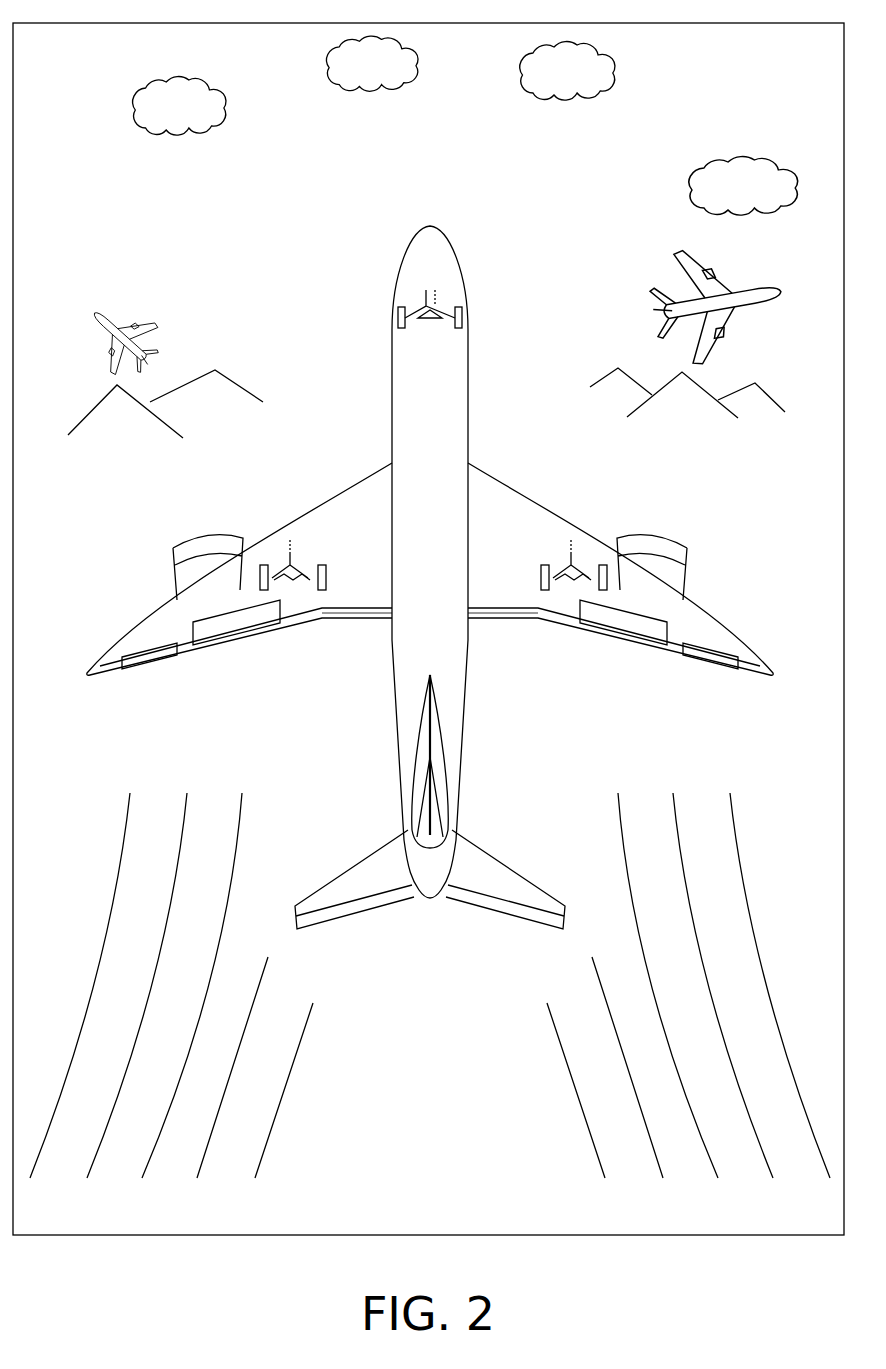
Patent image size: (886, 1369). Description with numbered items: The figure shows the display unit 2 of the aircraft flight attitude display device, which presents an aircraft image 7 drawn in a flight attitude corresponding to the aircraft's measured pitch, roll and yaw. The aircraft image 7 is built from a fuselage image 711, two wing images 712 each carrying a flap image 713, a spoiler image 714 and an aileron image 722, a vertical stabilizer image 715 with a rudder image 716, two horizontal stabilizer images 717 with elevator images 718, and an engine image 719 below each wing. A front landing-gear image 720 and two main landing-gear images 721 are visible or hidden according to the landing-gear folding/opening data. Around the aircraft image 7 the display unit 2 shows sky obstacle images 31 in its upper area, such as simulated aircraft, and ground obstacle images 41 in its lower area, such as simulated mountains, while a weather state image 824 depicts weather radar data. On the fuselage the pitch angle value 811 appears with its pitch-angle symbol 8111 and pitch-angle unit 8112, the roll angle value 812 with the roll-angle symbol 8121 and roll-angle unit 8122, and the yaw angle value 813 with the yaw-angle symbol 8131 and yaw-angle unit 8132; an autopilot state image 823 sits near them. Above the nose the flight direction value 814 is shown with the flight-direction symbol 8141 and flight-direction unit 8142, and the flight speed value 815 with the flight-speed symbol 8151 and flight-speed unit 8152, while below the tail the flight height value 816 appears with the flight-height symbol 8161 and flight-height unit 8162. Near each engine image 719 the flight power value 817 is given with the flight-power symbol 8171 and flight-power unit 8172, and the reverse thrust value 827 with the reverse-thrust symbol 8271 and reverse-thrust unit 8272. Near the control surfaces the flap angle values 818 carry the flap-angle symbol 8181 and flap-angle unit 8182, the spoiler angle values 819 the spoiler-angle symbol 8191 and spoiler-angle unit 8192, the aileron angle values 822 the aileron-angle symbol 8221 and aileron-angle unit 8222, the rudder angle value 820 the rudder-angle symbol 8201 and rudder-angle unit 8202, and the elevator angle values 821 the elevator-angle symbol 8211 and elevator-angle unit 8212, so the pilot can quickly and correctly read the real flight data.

The display unit 2 is at (165, 23).
The aircraft image 7 is at (386, 288).
The sky obstacle image 31 is at (775, 272).
The ground obstacle image 41 is at (238, 360).
The fuselage image 711 is at (468, 292).
The wing images 712 is at (100, 663).
The flap images 713 is at (300, 628).
The spoiler images 714 is at (318, 635).
The vertical stabilizer image 715 is at (412, 790).
The rudder image 716 is at (420, 830).
The horizontal stabilizer images 717 is at (335, 882).
The elevator images 718 is at (300, 923).
The engine image 719 is at (210, 538).
The front landing-gear image 720 is at (400, 318).
The main landing-gear images 721 is at (258, 578).
The aileron images 722 is at (112, 672).
The pitch angle value 811 is at (428, 442).
The pitch-angle symbol 8111 is at (402, 474).
The pitch-angle unit 8112 is at (455, 450).
The roll angle value 812 is at (423, 540).
The roll-angle symbol 8121 is at (400, 554).
The roll-angle unit 8122 is at (456, 545).
The yaw angle value 813 is at (438, 625).
The yaw-angle symbol 8131 is at (405, 626).
The yaw-angle unit 8132 is at (456, 611).
The flight direction value 814 is at (426, 140).
The flight-direction symbol 8141 is at (400, 160).
The flight-direction unit 8142 is at (457, 150).
The flight speed value 815 is at (412, 193).
The flight-speed symbol 8151 is at (362, 211).
The flight-speed unit 8152 is at (462, 208).
The flight height value 816 is at (428, 1111).
The flight-height symbol 8161 is at (375, 1094).
The flight-height unit 8162 is at (488, 1094).
The flight power value 817 is at (425, 472).
The flight-power symbol 8171 is at (88, 497).
The flight-power unit 8172 is at (118, 488).
The flap angle values 818 is at (434, 694).
The flap-angle symbol 8181 is at (250, 680).
The flap-angle unit 8182 is at (288, 678).
The spoiler angle values 819 is at (420, 540).
The spoiler-angle symbol 8191 is at (185, 600).
The spoiler-angle unit 8192 is at (248, 590).
The rudder angle value 820 is at (452, 920).
The rudder-angle symbol 8201 is at (428, 893).
The rudder-angle unit 8202 is at (455, 858).
The elevator angle values 821 is at (449, 909).
The elevator-angle symbol 8211 is at (370, 892).
The elevator-angle unit 8212 is at (398, 858).
The aileron angle values 822 is at (433, 699).
The aileron-angle symbol 8221 is at (160, 695).
The aileron-angle unit 8222 is at (190, 664).
The autopilot state image 823 is at (472, 375).
The weather state image 824 is at (655, 80).
The reverse thrust value 827 is at (434, 553).
The reverse-thrust symbol 8271 is at (75, 531).
The reverse-thrust unit 8272 is at (130, 533).